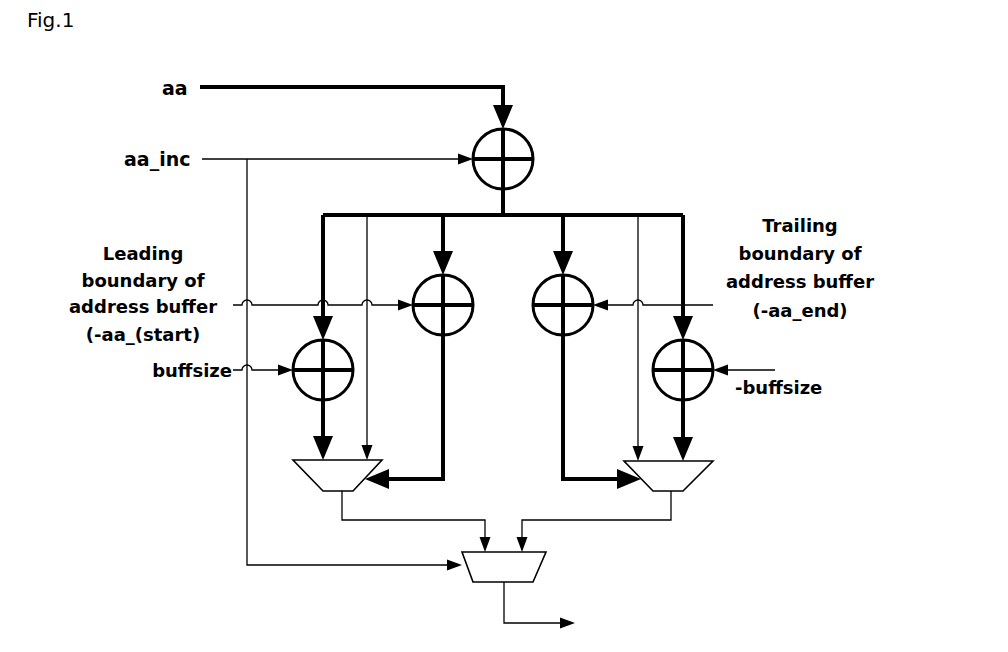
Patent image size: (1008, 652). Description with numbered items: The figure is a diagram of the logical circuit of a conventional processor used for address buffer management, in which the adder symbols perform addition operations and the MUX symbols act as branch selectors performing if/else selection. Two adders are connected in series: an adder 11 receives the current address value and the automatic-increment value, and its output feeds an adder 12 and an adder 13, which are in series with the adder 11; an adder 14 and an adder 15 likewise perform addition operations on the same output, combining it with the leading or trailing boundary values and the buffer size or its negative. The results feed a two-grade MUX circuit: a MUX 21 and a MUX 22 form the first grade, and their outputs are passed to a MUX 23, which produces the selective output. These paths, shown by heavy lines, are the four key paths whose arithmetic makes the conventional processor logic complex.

The adder 11 is at (535, 147).
The adder 12 is at (477, 265).
The adder 13 is at (370, 355).
The adder 14 is at (575, 275).
The adder 15 is at (715, 357).
The MUX 21 is at (305, 485).
The MUX 22 is at (723, 495).
The MUX 23 is at (570, 578).